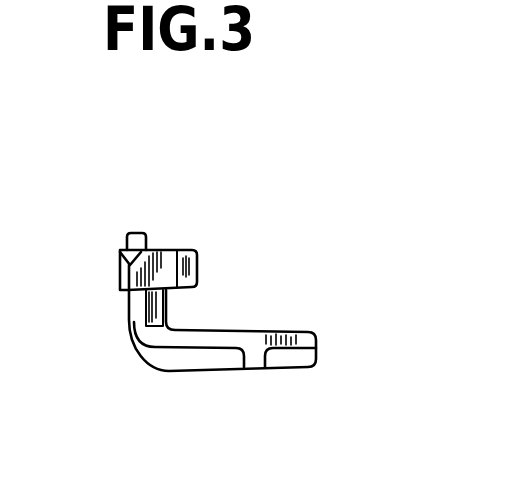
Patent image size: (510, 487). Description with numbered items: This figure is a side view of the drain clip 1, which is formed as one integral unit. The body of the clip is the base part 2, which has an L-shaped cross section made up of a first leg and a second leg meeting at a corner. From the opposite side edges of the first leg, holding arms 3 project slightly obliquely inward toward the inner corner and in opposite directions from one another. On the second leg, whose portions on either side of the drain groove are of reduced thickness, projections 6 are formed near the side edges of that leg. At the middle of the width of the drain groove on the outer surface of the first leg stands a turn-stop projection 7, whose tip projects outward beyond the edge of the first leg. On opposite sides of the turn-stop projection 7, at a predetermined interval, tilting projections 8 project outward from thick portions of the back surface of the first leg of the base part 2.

The drain clip 1 is at (283, 266).
The base part 2 is at (223, 338).
The holding arms 3 is at (166, 252).
The projections 6 is at (252, 349).
The turn-stop projection 7 is at (139, 233).
The tilting projections 8 is at (118, 249).